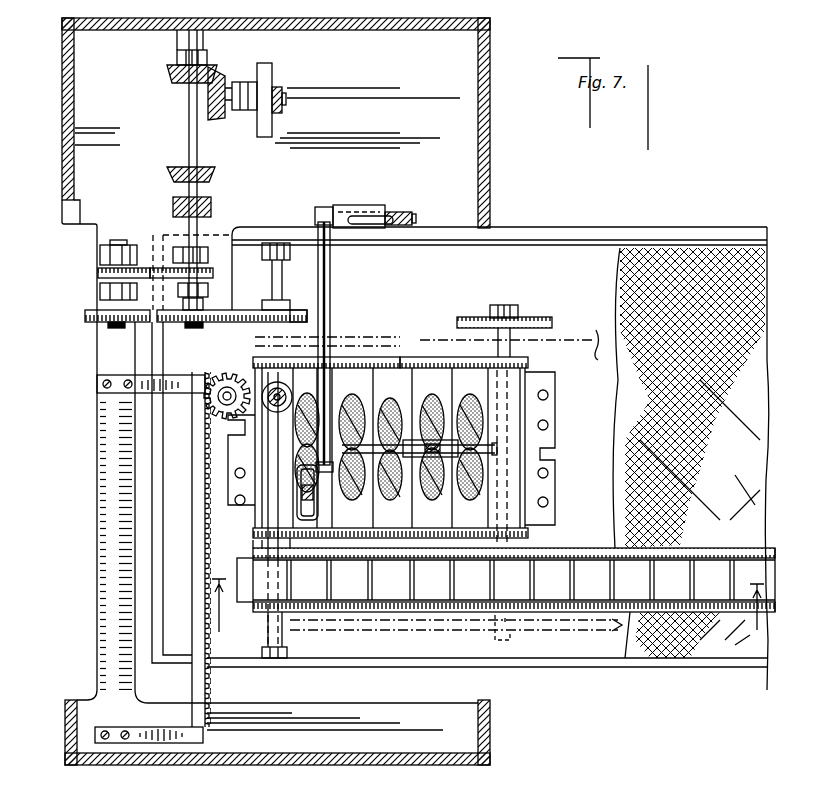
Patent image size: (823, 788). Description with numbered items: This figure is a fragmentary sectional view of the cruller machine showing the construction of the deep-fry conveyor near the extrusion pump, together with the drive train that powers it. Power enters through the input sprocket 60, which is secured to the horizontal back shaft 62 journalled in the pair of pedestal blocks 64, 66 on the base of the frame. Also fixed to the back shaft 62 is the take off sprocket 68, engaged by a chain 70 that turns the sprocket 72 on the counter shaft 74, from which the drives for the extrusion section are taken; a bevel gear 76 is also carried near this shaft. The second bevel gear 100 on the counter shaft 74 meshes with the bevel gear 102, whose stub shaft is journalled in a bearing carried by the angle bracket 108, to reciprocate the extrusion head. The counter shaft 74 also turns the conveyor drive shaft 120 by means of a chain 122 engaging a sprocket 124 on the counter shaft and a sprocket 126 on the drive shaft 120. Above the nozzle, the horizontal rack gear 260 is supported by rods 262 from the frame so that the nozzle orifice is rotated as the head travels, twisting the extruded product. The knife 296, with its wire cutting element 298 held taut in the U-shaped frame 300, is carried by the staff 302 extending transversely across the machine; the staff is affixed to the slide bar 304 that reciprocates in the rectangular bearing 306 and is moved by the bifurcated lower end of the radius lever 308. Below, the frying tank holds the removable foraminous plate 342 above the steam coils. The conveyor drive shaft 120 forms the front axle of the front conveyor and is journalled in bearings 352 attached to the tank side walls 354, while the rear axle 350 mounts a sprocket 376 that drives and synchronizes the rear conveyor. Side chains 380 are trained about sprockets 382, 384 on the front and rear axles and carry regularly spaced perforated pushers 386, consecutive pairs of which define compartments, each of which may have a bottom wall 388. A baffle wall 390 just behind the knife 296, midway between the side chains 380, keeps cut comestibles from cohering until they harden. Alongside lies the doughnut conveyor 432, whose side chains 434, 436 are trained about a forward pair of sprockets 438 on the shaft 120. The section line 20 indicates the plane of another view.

The section line 20 is at (487, 595).
The input sprocket 60 is at (90, 314).
The back shaft 62 is at (118, 328).
The pedestal block 64 is at (100, 296).
The pedestal block 66 is at (100, 256).
The take off sprocket 68 is at (140, 268).
The chain 70 is at (100, 272).
The sprocket 72 is at (212, 256).
The counter shaft 74 is at (190, 150).
The bevel gear 76 is at (215, 177).
The second bevel gear 100 is at (168, 70).
The bevel gear 102 is at (218, 118).
The angle bracket 108 is at (240, 88).
The conveyor drive shaft 120 is at (272, 285).
The chain 122 is at (258, 324).
The sprocket 124 is at (212, 324).
The sprocket 126 is at (292, 324).
The rack gear 260 is at (192, 648).
The rods 262 is at (133, 394).
The knife 296 is at (340, 515).
The wire cutting element 298 is at (282, 535).
The U-shaped frame 300 is at (312, 528).
The staff 302 is at (331, 268).
The slide bar 304 is at (322, 208).
The rectangular bearing 306 is at (375, 207).
The radius lever 308 is at (414, 218).
The foraminous plate 342 is at (770, 240).
The rear axle 350 is at (478, 318).
The bearings 352 is at (293, 240).
The side walls 354 is at (626, 224).
The sprocket 376 is at (532, 318).
The side chains 380 is at (416, 358).
The sprocket 382 is at (300, 358).
The sprocket 384 is at (530, 362).
The pushers 386 is at (412, 396).
The bottom wall 388 is at (392, 528).
The baffle wall 390 is at (487, 450).
The doughnut conveyor 432 is at (479, 625).
The side chain 434 is at (585, 613).
The side chain 436 is at (568, 548).
The sprockets 438 is at (262, 545).